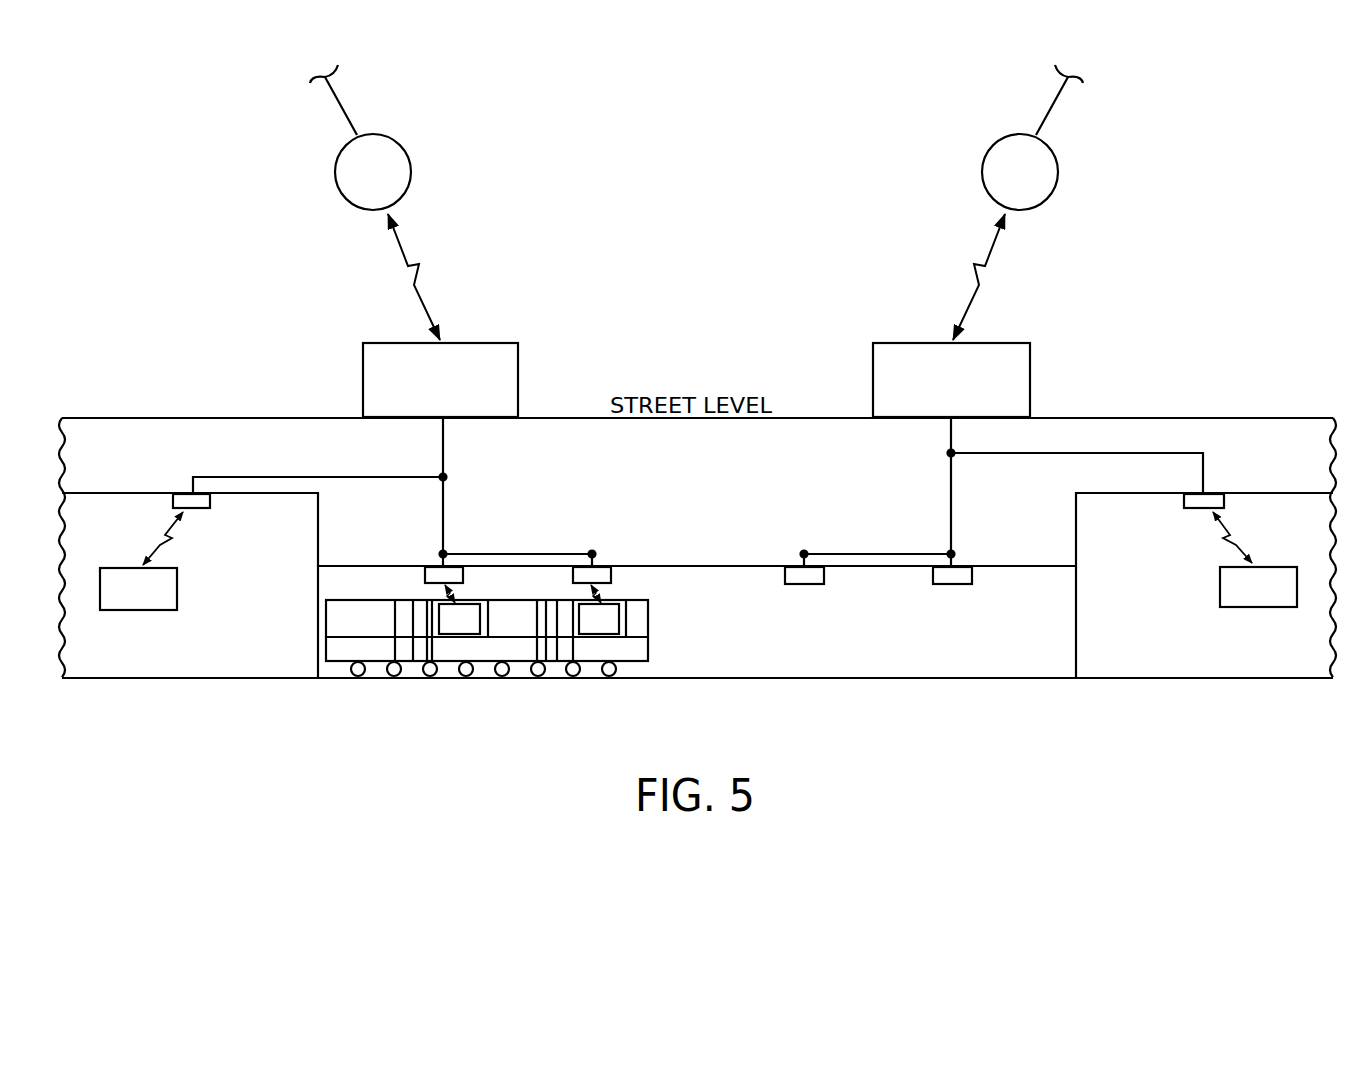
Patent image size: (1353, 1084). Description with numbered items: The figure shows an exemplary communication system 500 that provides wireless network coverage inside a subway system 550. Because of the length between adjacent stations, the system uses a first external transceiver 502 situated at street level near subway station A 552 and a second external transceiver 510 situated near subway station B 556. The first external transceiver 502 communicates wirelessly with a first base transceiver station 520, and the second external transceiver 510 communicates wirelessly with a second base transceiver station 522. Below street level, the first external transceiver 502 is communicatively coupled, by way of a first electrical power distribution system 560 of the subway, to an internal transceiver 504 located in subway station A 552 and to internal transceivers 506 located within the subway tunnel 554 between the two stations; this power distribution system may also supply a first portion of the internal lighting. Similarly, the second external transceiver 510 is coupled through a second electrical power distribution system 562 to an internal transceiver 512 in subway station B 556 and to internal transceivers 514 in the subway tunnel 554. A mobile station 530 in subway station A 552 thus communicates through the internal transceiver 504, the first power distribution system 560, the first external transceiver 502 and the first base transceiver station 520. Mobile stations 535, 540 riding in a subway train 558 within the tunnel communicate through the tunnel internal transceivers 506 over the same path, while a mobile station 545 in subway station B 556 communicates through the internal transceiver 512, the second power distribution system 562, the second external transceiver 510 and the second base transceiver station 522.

The communication system 500 is at (744, 258).
The first external transceiver 502 is at (363, 378).
The internal transceiver 504 is at (212, 497).
The internal transceivers 506 is at (424, 573).
The second external transceiver 510 is at (1030, 378).
The internal transceiver 512 is at (1184, 497).
The internal transceivers 514 is at (826, 572).
The first base transceiver station 520 is at (342, 204).
The second base transceiver station 522 is at (1051, 204).
The mobile station 530 is at (178, 588).
The mobile station 535 is at (448, 634).
The mobile station 540 is at (598, 634).
The mobile station 545 is at (1219, 585).
The subway system 550 is at (716, 540).
The subway station A 552 is at (290, 670).
The subway tunnel 554 is at (915, 663).
The subway station B 556 is at (1100, 668).
The subway train 558 is at (650, 641).
The first electrical power distribution system 560 is at (444, 516).
The second electrical power distribution system 562 is at (953, 479).